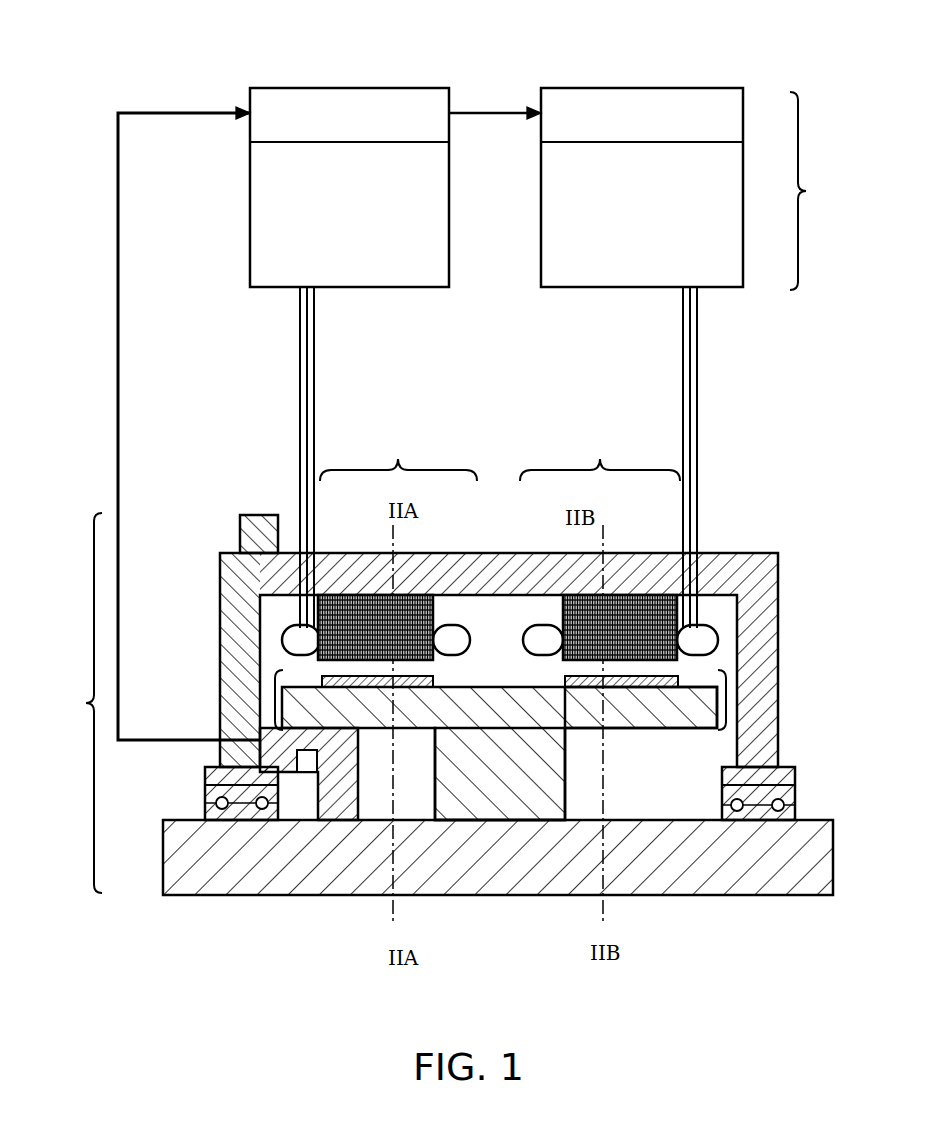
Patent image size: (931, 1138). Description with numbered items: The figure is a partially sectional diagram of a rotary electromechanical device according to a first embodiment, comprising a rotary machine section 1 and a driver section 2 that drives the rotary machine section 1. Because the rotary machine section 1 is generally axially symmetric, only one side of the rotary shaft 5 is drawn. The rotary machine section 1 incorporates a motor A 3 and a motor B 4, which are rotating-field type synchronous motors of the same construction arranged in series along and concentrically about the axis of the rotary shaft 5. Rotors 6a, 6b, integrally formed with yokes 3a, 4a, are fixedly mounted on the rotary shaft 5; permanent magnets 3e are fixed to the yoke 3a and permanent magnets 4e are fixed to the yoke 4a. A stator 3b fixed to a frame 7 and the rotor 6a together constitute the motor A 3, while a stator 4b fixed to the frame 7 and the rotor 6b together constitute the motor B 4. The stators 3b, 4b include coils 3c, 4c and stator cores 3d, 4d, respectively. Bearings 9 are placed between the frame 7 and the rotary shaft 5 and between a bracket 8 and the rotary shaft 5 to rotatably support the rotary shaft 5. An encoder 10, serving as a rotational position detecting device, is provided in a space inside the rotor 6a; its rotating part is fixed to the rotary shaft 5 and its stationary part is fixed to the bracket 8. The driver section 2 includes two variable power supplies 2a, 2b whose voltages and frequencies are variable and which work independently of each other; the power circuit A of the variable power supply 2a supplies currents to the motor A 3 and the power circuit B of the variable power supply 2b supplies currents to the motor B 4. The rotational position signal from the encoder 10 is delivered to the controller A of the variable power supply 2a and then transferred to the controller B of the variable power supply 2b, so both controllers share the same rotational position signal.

The rotary machine section 1 is at (154, 500).
The driver section 2 is at (814, 191).
The variable power supply 2a is at (370, 88).
The variable power supply 2b is at (680, 88).
The motor A 3 is at (395, 527).
The yoke 3a is at (372, 730).
The stator 3b is at (366, 622).
The coils 3c is at (448, 622).
The stator core 3d is at (418, 622).
The permanent magnets 3e is at (437, 683).
The motor B 4 is at (619, 527).
The yoke 4a is at (657, 730).
The stator 4b is at (648, 622).
The coils 4c is at (545, 626).
The stator core 4d is at (616, 622).
The permanent magnets 4e is at (563, 683).
The rotary shaft 5 is at (755, 898).
The rotor 6a is at (277, 698).
The rotor 6b is at (745, 703).
The frame 7 is at (740, 553).
The bracket 8 is at (218, 578).
The bearings 9 is at (205, 793).
The encoder 10 is at (338, 820).